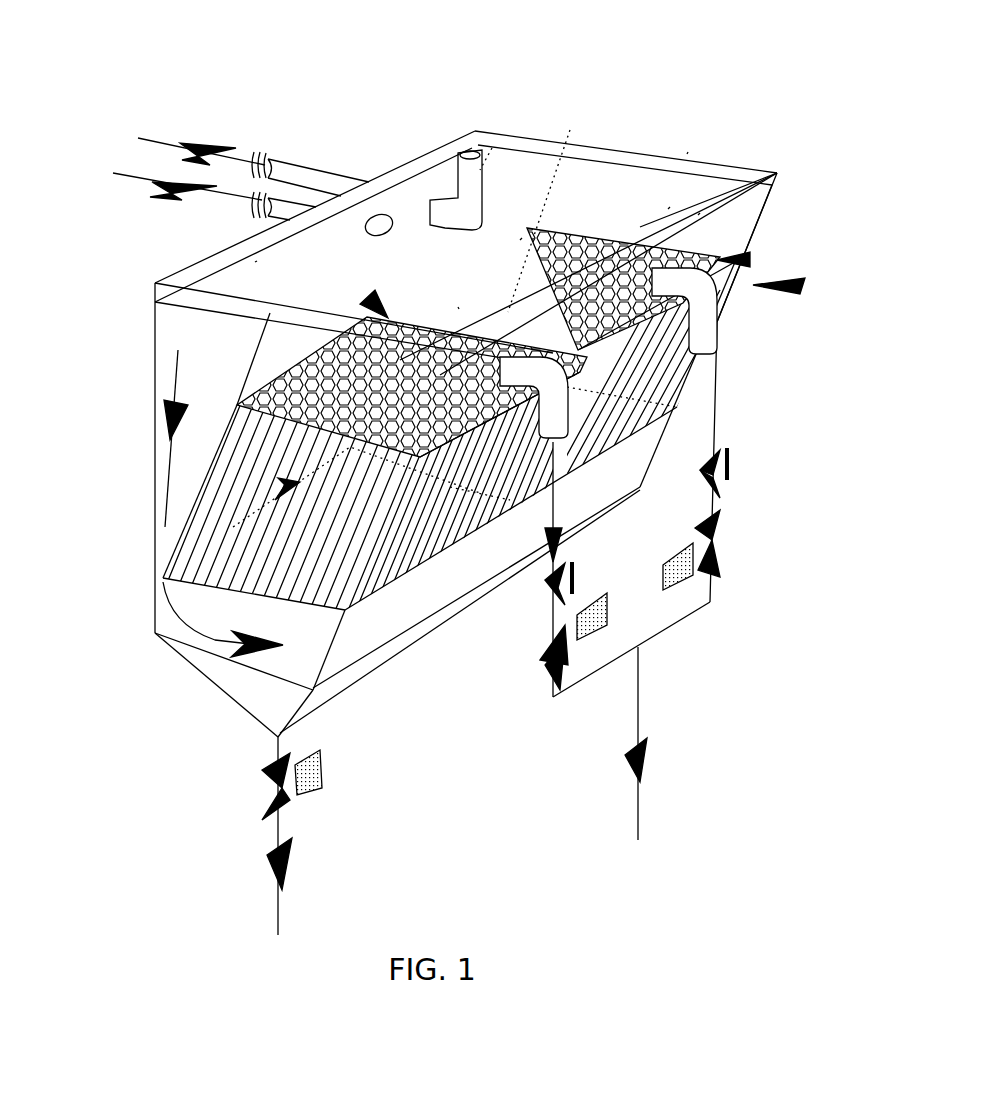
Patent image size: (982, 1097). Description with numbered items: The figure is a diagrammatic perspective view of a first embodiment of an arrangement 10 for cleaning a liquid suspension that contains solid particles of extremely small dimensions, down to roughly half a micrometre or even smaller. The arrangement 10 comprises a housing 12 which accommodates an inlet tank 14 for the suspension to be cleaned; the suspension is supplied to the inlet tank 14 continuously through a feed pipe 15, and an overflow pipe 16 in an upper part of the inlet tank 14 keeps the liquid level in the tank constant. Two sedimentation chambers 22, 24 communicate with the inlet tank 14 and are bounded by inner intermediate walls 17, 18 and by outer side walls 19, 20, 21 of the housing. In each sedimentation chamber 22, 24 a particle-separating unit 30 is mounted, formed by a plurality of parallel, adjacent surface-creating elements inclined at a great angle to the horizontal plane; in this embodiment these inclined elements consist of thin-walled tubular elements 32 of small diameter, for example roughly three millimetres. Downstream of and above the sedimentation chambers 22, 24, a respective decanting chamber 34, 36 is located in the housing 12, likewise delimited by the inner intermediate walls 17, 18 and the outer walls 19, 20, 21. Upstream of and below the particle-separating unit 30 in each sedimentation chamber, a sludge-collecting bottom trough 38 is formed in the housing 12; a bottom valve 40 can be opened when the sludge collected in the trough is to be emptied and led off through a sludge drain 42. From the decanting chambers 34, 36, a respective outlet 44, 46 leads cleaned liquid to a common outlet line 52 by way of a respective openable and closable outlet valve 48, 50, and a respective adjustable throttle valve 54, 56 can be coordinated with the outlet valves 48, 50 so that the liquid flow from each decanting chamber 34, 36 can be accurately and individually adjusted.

The arrangement 10 is at (800, 288).
The housing 12 is at (385, 620).
The inlet tank 14 is at (444, 158).
The feed pipe 15 is at (265, 210).
The overflow pipe 16 is at (492, 148).
The inner intermediate wall 17 is at (570, 130).
The inner intermediate wall 18 is at (522, 238).
The outer side wall 19 is at (688, 152).
The outer side wall 20 is at (700, 213).
The outer side wall 21 is at (255, 262).
The sedimentation chamber 22 is at (410, 560).
The sedimentation chamber 24 is at (580, 427).
The particle-separating unit 30 is at (385, 315).
The tubular elements 32 is at (422, 310).
The decanting chamber 34 is at (458, 307).
The decanting chamber 36 is at (670, 207).
The sludge-collecting bottom trough 38 is at (262, 697).
The bottom valve 40 is at (318, 783).
The sludge drain 42 is at (280, 898).
The outlet 44 is at (570, 418).
The outlet 46 is at (722, 326).
The outlet valve 48 is at (603, 613).
The outlet valve 50 is at (720, 562).
The common outlet line 52 is at (638, 808).
The adjustable throttle valve 54 is at (577, 583).
The adjustable throttle valve 56 is at (730, 475).